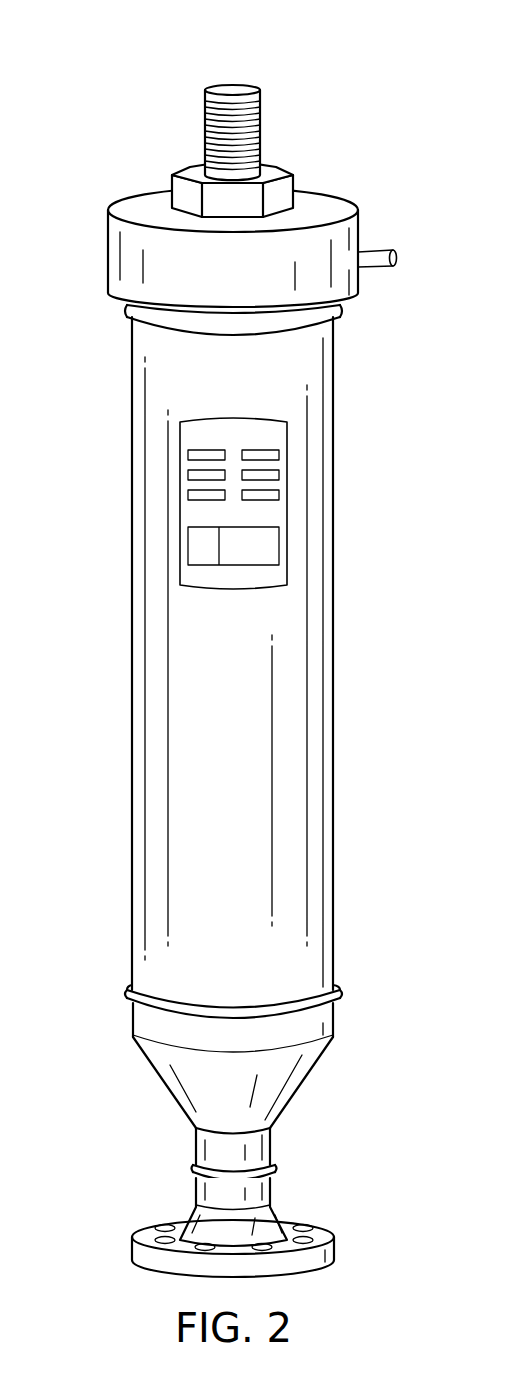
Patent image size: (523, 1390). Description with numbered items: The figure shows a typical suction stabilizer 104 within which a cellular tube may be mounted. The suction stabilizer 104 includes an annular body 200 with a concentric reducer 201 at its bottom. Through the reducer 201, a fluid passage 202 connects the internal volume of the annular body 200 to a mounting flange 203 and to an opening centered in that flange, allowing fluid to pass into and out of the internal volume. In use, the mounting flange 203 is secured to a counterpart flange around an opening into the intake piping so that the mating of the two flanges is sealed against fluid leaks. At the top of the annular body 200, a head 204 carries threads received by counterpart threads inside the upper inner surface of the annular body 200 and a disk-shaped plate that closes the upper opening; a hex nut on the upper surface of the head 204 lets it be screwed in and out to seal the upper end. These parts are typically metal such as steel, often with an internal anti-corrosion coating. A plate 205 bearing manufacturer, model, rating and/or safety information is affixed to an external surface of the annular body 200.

The suction stabilizer 104 is at (150, 58).
The annular body 200 is at (132, 577).
The concentric reducer 201 is at (132, 1023).
The fluid passage 202 is at (195, 1153).
The mounting flange 203 is at (132, 1245).
The head 204 is at (108, 250).
The plate 205 is at (233, 420).